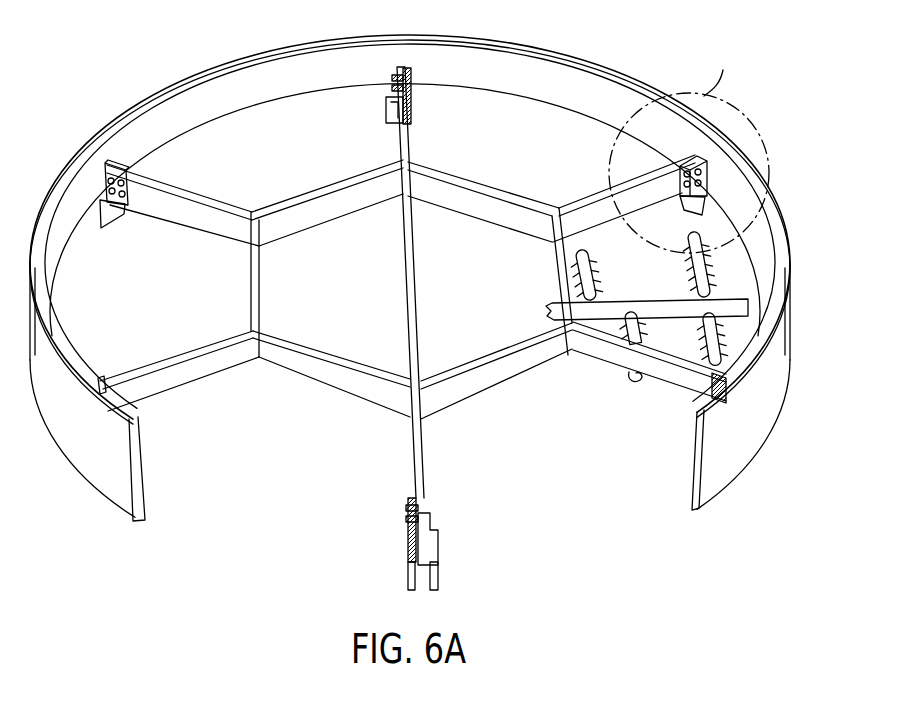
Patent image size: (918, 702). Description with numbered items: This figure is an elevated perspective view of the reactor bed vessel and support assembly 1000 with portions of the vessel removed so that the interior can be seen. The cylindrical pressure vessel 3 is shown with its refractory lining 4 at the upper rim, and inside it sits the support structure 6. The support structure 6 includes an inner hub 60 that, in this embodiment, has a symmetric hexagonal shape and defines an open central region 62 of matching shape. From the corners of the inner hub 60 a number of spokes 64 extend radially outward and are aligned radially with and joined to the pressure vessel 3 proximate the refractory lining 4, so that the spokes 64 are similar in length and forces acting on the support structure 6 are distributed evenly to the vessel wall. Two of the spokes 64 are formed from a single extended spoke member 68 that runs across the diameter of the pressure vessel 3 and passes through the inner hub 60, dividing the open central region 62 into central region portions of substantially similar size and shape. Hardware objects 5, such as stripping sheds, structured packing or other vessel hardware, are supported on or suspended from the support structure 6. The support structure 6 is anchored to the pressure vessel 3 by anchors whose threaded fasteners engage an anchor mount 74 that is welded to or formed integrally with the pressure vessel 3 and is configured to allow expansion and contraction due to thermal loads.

The reactor bed vessel and support assembly 1000 is at (87, 86).
The pressure vessel 3 is at (92, 450).
The refractory lining 4 is at (262, 87).
The hardware objects 5 is at (742, 334).
The support structure 6 is at (148, 176).
The inner hub 60 is at (351, 177).
The open central region 62 is at (378, 237).
The spokes 64 is at (583, 197).
The extended spoke member 68 is at (412, 240).
The anchor mount 74 is at (410, 108).